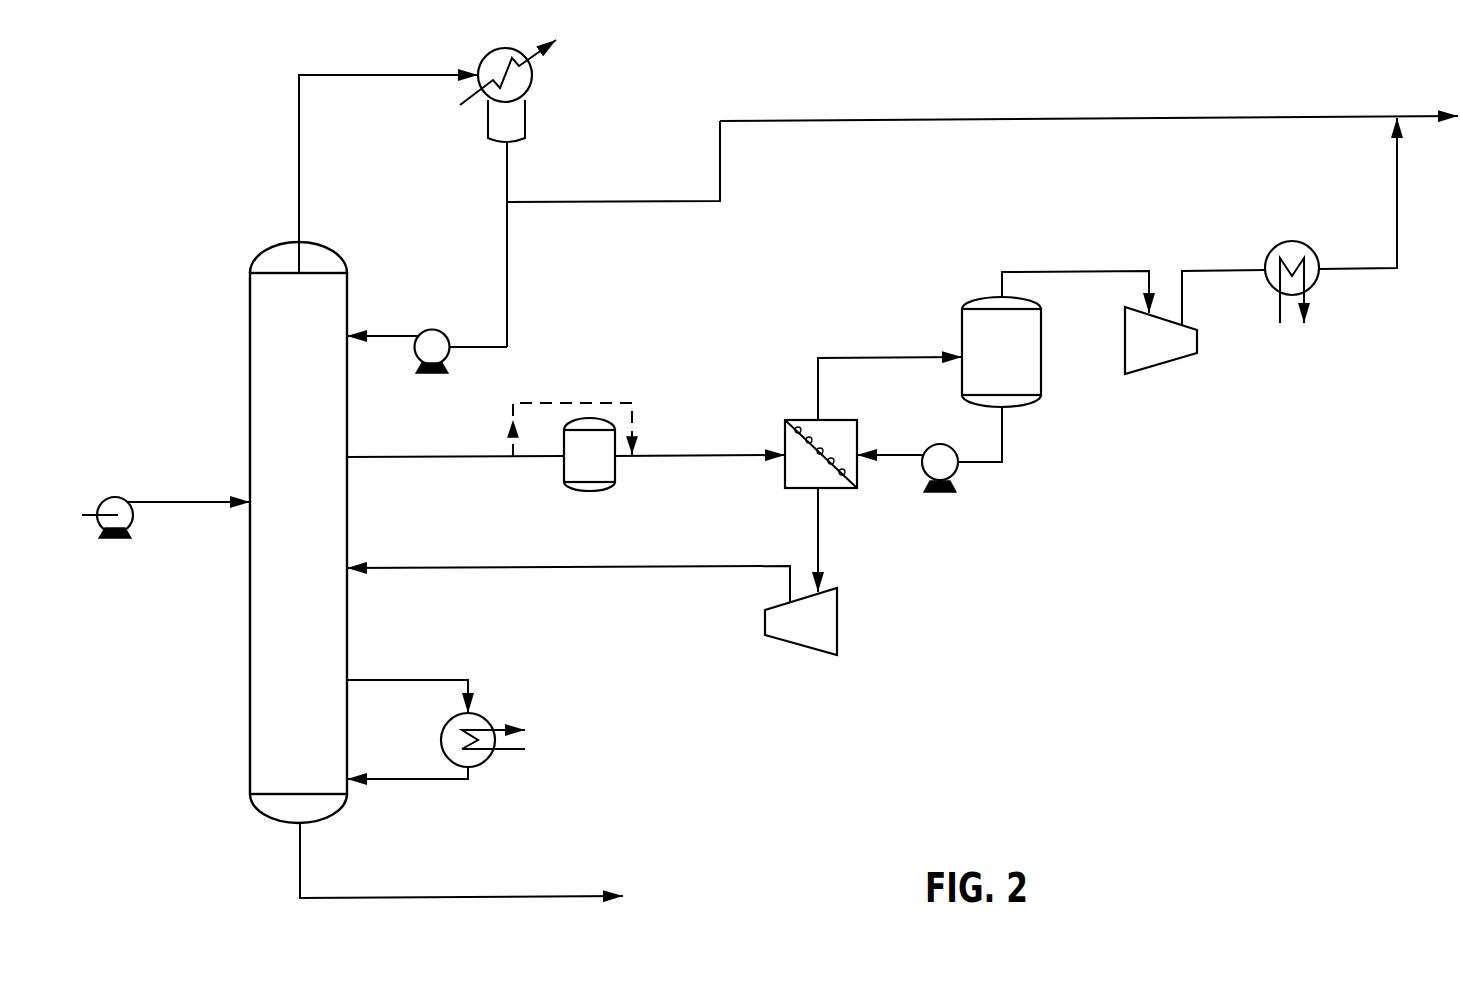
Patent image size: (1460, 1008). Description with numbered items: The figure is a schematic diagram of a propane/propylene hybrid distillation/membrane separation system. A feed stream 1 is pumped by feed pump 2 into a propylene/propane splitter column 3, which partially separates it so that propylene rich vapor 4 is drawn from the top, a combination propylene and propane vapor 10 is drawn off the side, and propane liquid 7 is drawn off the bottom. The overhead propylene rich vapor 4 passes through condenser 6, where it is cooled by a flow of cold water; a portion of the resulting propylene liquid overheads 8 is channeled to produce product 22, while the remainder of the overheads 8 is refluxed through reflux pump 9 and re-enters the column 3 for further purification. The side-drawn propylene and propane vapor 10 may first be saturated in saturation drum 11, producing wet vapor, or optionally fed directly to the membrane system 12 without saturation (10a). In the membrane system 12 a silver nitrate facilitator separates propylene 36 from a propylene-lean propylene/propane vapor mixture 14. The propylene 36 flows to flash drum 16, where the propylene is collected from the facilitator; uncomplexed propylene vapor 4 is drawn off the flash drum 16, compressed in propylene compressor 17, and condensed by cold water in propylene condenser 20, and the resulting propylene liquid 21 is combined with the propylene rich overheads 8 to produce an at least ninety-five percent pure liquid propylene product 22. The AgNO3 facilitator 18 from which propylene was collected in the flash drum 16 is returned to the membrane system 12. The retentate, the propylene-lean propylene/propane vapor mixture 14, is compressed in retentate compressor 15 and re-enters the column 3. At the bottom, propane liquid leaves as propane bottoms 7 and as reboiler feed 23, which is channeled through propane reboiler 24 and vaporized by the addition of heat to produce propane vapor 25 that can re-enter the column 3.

The feed stream 1 is at (209, 500).
The feed pump 2 is at (135, 524).
The propylene/propane splitter column 3 is at (249, 423).
The propylene rich vapor 4 is at (402, 73).
The condenser 6 is at (527, 117).
The propane liquid 7 is at (505, 896).
The propylene liquid overheads 8 is at (506, 176).
The reflux pump 9 is at (446, 355).
The propylene and propane vapor 10 is at (460, 456).
The direct feed of vapor to membrane system 10a is at (594, 400).
The saturation drum 11 is at (590, 490).
The membrane system 12 is at (785, 425).
The propylene-lean propylene/propane vapor mixture 14 is at (837, 489).
The retentate compressor 15 is at (838, 630).
The flash drum 16 is at (1043, 342).
The propylene compressor 17 is at (1165, 355).
The AgNO3 facilitator 18 is at (901, 452).
The propylene condenser 20 is at (1318, 250).
The propylene liquid 21 is at (1400, 215).
The liquid propylene product 22 is at (1420, 114).
The reboiler feed 23 is at (432, 678).
The propane reboiler 24 is at (487, 764).
The propane vapor 25 is at (434, 780).
The propylene 36 is at (880, 357).